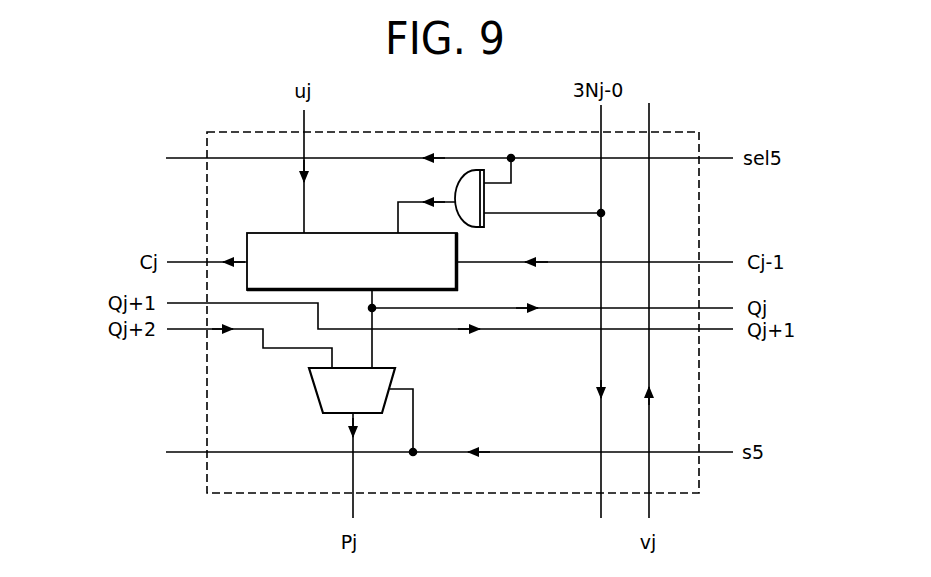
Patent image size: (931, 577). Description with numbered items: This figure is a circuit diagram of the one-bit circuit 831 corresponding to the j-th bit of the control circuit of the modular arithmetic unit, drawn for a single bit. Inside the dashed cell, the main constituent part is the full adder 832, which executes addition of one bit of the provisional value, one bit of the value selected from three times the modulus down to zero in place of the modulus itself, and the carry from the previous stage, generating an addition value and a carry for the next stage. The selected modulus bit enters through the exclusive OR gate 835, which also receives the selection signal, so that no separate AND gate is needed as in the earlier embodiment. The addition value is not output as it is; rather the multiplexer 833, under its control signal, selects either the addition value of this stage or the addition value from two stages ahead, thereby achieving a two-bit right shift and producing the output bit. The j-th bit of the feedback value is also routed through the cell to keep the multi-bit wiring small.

The one-bit circuit 831 is at (364, 132).
The full adder 832 is at (258, 232).
The multiplexer 833 is at (309, 393).
The exclusive OR gate 835 is at (474, 227).